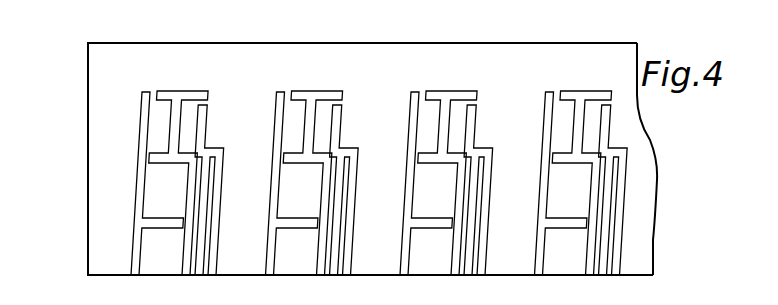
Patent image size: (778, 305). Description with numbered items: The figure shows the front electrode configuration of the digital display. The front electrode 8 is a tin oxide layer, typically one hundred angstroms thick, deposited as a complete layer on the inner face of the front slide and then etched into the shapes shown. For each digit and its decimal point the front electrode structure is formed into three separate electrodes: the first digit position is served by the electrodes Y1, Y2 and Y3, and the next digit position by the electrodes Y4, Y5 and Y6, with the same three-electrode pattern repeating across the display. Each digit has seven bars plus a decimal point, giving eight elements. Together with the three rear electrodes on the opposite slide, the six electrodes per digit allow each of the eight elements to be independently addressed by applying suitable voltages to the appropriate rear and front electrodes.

The electrode 8 is at (183, 90).
The front electrode Y1 is at (130, 262).
The front electrode Y2 is at (190, 261).
The front electrode Y3 is at (213, 262).
The front electrode Y4 is at (269, 265).
The front electrode Y5 is at (323, 270).
The front electrode Y6 is at (346, 268).